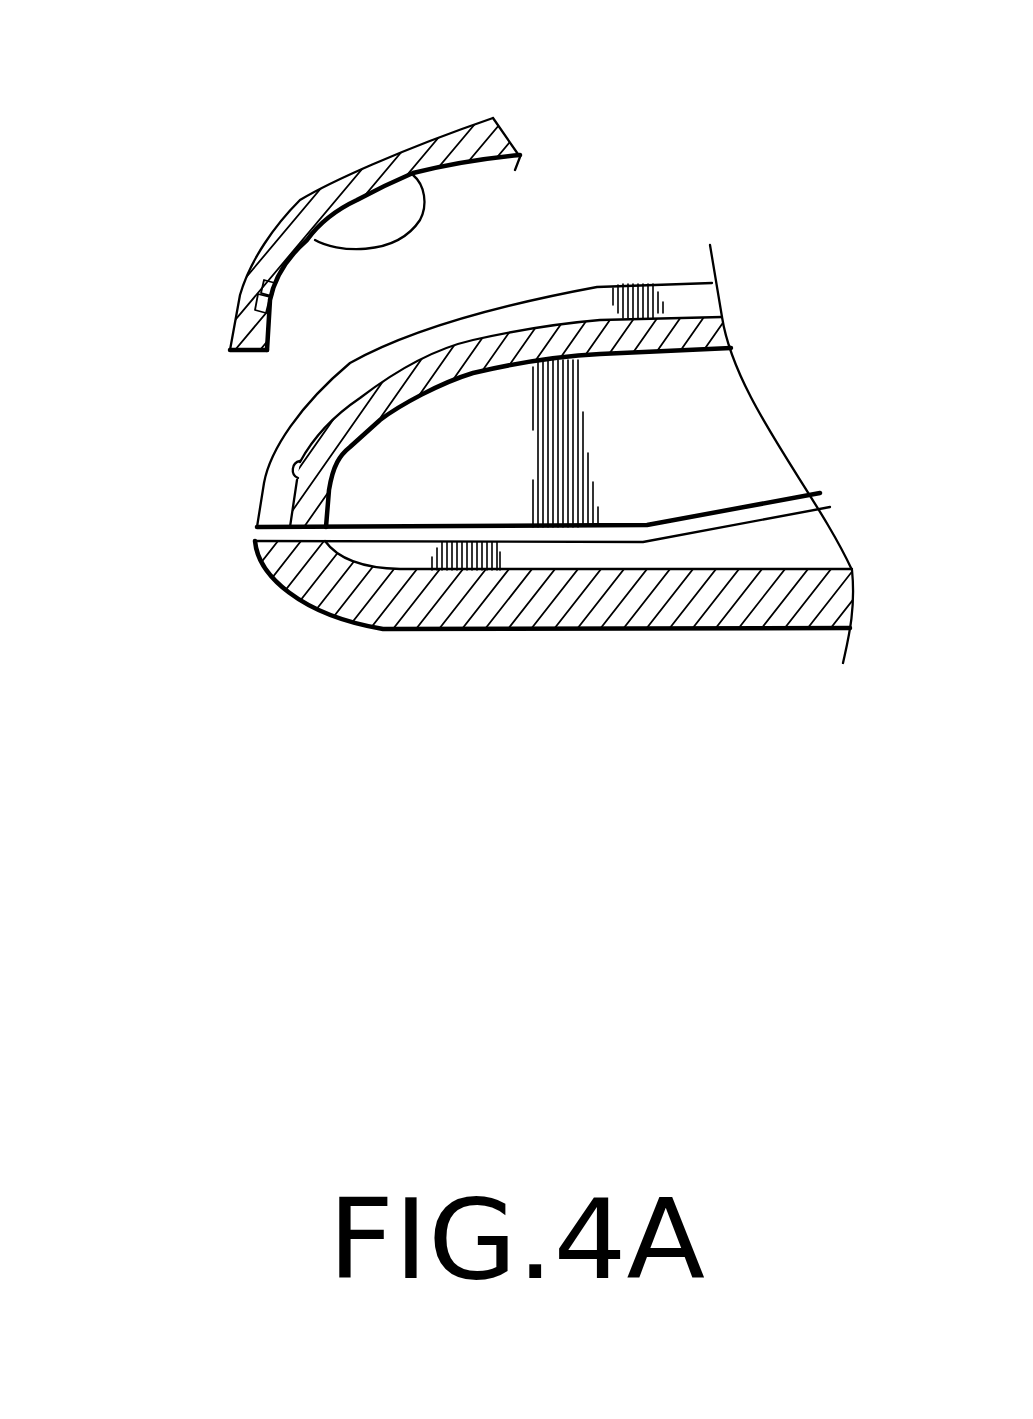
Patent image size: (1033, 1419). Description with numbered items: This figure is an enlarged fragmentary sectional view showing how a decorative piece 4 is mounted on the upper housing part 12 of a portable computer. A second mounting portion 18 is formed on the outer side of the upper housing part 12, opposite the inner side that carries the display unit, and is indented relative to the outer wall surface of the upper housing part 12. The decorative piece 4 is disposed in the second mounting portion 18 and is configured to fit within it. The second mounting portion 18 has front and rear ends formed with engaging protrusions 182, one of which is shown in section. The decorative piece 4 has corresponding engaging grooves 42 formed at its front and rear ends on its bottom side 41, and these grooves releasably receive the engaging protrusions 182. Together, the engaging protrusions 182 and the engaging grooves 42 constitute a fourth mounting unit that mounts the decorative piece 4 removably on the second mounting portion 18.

The upper housing part 12 is at (502, 494).
The second mounting portion 18 is at (340, 369).
The engaging protrusion 182 is at (300, 473).
The decorative piece 4 is at (353, 165).
The bottom side 41 is at (307, 235).
The engaging groove 42 is at (257, 283).